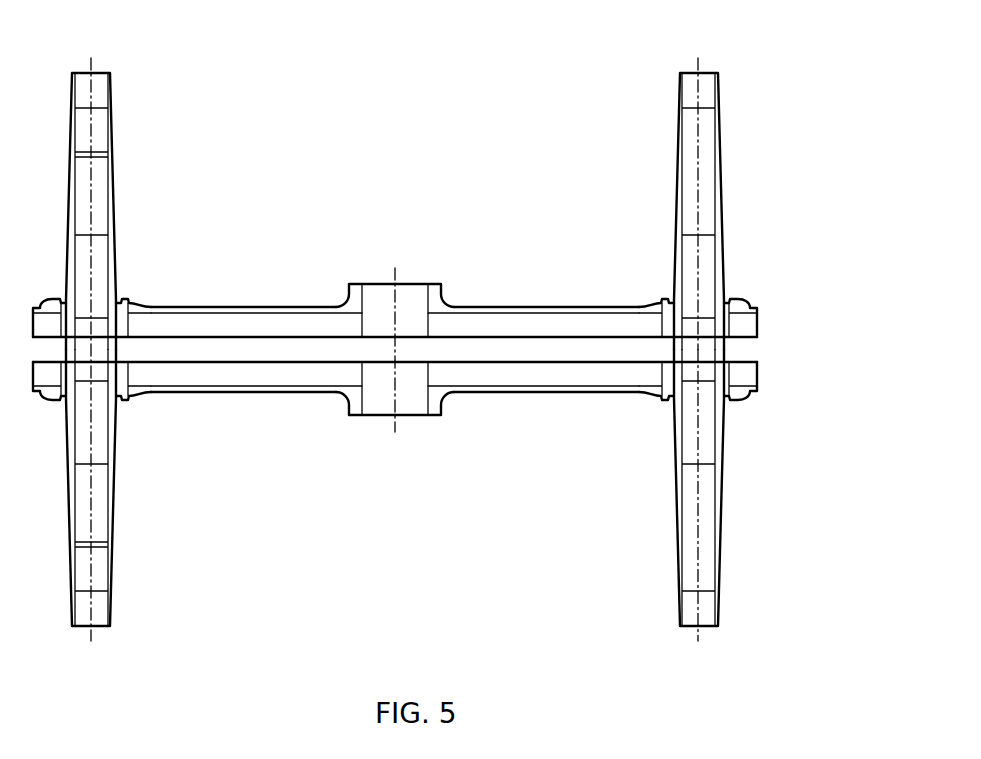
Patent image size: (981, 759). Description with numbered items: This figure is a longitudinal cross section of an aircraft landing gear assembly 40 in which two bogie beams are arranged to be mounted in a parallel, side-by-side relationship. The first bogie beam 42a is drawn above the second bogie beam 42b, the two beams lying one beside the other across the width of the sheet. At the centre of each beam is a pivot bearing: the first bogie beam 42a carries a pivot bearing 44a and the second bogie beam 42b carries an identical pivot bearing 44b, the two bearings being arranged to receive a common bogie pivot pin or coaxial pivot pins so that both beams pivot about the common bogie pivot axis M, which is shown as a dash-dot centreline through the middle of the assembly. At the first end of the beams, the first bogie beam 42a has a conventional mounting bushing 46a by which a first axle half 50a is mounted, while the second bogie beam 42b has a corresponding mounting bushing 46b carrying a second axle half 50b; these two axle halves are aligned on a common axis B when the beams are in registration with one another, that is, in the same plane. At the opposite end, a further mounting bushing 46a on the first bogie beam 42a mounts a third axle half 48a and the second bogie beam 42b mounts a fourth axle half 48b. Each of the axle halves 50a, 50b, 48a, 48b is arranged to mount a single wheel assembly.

The aircraft landing gear assembly 40 is at (751, 57).
The first bogie beam 42a is at (527, 307).
The second bogie beam 42b is at (527, 393).
The pivot bearing 44a is at (378, 293).
The pivot bearing 44b is at (406, 405).
The mounting bushing 46a is at (666, 301).
The mounting bushing 46b is at (666, 399).
The third axle half 48a is at (722, 217).
The fourth axle half 48b is at (720, 488).
The first axle half 50a is at (112, 205).
The second axle half 50b is at (112, 528).
The common bogie pivot axis M is at (397, 298).
The common axis B is at (93, 440).